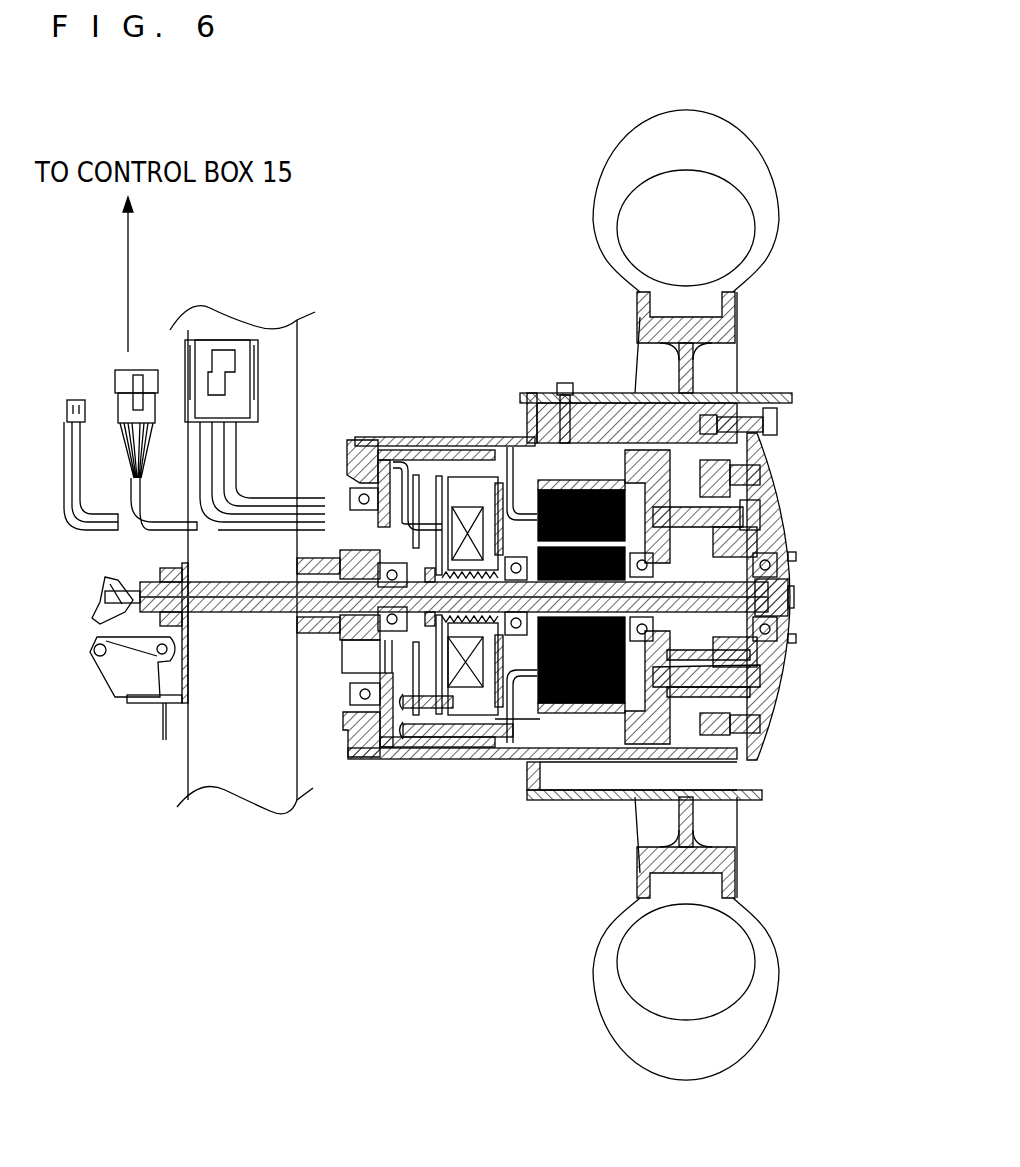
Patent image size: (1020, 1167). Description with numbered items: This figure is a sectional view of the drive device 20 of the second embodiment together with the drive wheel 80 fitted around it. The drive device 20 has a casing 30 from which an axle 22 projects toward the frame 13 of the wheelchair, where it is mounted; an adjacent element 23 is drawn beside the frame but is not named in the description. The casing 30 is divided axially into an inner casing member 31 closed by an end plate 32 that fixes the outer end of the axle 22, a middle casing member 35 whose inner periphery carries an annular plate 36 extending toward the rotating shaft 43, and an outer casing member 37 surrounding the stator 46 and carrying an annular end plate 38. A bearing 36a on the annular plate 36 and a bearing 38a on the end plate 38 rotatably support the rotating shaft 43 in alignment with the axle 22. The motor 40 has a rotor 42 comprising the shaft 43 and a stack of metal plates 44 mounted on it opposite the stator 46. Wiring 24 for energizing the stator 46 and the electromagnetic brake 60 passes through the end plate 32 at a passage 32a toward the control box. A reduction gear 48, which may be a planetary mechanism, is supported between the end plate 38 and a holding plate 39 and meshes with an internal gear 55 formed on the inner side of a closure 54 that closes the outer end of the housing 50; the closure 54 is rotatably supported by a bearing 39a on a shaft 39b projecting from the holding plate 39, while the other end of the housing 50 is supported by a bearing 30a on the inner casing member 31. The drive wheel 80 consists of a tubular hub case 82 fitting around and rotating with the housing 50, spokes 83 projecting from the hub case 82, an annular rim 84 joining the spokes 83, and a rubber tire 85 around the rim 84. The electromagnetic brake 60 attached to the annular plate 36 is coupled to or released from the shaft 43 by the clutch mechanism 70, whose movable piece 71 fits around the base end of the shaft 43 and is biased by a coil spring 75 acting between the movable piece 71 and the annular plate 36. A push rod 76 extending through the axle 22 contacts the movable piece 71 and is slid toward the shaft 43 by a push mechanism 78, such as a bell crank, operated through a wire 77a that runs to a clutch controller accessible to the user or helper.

The frame 13 is at (188, 775).
The drive device 20 is at (762, 330).
The axle 22 is at (258, 600).
The frame member 23 is at (215, 600).
The wiring 24 is at (240, 455).
The casing 30 is at (500, 860).
The bearing 30a is at (372, 685).
The inner casing member 31 is at (433, 737).
The end plate 32 is at (373, 470).
The wiring passage 32a is at (337, 523).
The middle casing member 35 is at (520, 737).
The annular plate 36 is at (498, 485).
The bearing 36a is at (515, 470).
The outer casing member 37 is at (540, 800).
The annular end plate 38 is at (760, 457).
The bearing 38a is at (690, 515).
The holding plate 39 is at (757, 537).
The bearing 39a is at (786, 556).
The shaft 39b is at (786, 578).
The motor 40 is at (618, 700).
The rotor 42 is at (848, 663).
The rotating shaft 43 is at (745, 668).
The stack of metal plates 44 is at (745, 690).
The stator 46 is at (600, 650).
The reduction gear 48 is at (776, 640).
The housing 50 is at (740, 800).
The closure 54 is at (755, 770).
The internal gear 55 is at (768, 745).
The electromagnetic brake 60 is at (468, 485).
The clutch mechanism 70 is at (405, 655).
The movable piece 71 is at (435, 560).
The biasing means 75 is at (455, 572).
The push rod 76 is at (135, 600).
The wire 77a is at (165, 745).
The push mechanism 78 is at (110, 675).
The drive wheel 80 is at (780, 916).
The hub case 82 is at (735, 394).
The spokes 83 is at (693, 363).
The rim 84 is at (735, 290).
The tire 85 is at (760, 998).